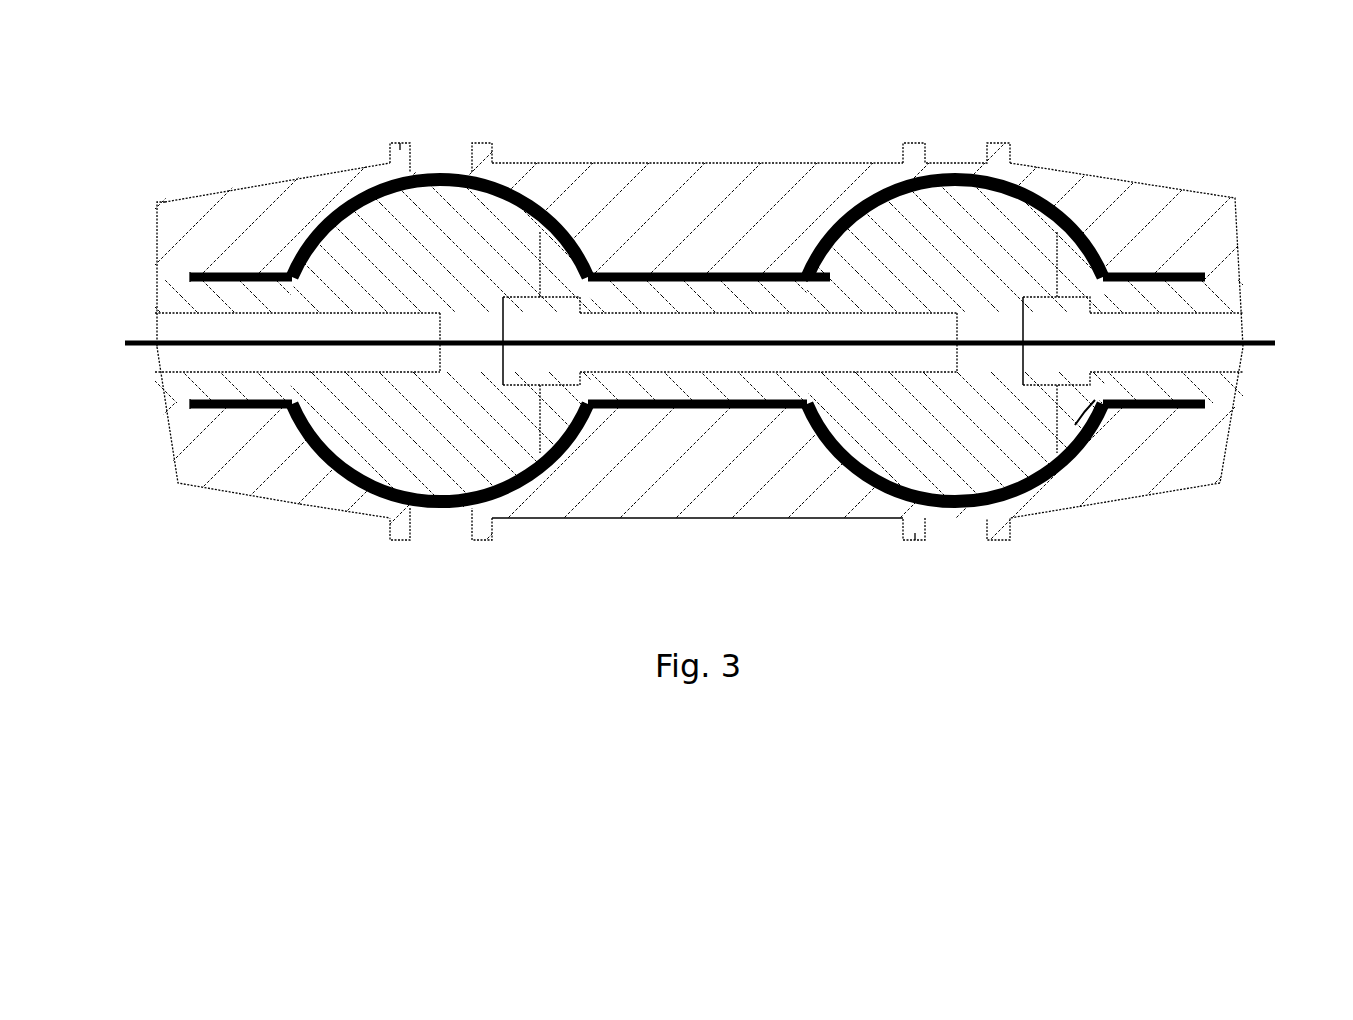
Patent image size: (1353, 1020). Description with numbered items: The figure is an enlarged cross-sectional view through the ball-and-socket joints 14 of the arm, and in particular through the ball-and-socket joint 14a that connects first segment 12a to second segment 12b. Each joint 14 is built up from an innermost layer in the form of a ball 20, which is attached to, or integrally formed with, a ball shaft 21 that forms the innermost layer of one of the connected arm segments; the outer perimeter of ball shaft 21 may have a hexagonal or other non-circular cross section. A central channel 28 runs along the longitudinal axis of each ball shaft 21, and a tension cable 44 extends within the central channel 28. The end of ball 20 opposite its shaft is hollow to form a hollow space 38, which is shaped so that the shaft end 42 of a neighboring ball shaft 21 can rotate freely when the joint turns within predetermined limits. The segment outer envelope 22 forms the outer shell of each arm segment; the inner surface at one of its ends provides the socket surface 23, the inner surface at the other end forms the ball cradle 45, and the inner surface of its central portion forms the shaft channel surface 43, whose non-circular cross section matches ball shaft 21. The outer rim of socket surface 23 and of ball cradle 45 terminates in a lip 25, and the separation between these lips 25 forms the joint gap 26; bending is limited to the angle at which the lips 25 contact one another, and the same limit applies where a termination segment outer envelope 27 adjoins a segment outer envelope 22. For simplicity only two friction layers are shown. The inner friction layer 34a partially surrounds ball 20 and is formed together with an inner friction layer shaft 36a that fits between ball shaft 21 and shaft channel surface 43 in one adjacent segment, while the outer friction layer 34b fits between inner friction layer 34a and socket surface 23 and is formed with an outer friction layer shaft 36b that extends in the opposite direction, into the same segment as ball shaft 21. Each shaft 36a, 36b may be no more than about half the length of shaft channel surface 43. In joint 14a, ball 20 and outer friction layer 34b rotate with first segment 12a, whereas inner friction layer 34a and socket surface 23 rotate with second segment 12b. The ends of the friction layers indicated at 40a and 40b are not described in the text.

The first segment 12a is at (188, 150).
The second segment 12b is at (729, 110).
The ball-and-socket joint 14 is at (970, 110).
The ball-and-socket joint 14a is at (369, 125).
The ball 20 is at (480, 453).
The ball shaft 21 is at (200, 383).
The segment outer envelope 22 is at (710, 166).
The socket surface 23 is at (560, 240).
The lip 25 is at (472, 150).
The joint gap 26 is at (945, 140).
The termination segment outer envelope 27 is at (282, 503).
The central channel 28 is at (270, 325).
The inner friction layer 34a is at (1095, 247).
The outer friction layer 34b is at (312, 232).
The inner friction layer shaft 36a is at (640, 274).
The outer friction layer shaft 36b is at (215, 408).
The hollow space 38 is at (1035, 275).
The liner end 40a is at (232, 259).
The liner end 40b is at (787, 254).
The shaft end 42 is at (502, 305).
The shaft channel surface 43 is at (698, 405).
The tension cable 44 is at (1190, 343).
The ball cradle 45 is at (305, 443).